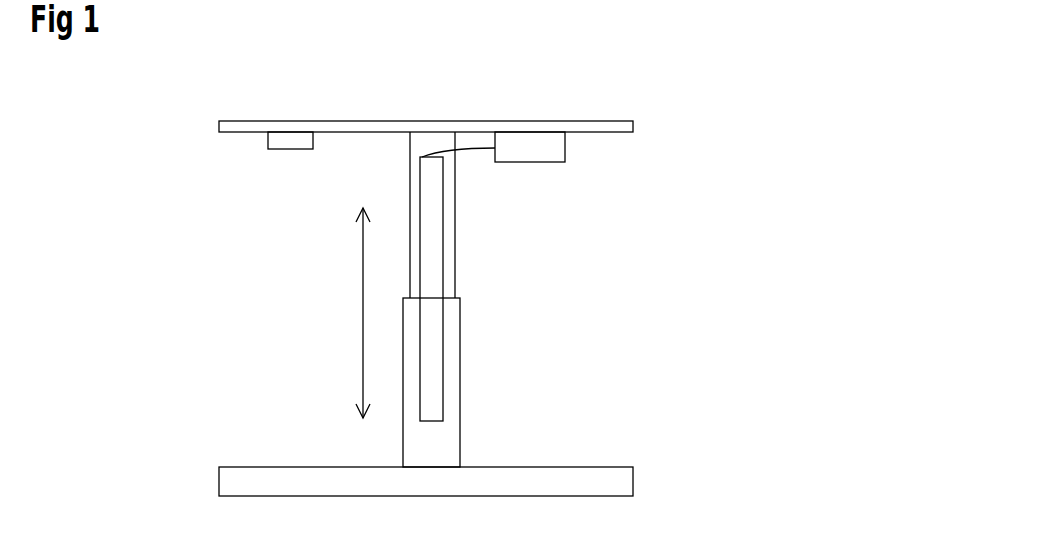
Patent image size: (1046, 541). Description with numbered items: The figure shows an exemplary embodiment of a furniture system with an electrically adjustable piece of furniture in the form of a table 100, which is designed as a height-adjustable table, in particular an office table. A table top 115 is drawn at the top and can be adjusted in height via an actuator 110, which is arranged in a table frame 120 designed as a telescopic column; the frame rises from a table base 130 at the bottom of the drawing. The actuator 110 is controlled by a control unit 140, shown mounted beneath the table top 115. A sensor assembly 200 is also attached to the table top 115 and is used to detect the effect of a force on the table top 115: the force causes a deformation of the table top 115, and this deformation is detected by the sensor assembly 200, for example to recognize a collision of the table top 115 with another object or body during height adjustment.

The table 100 is at (254, 103).
The table top 115 is at (633, 127).
The sensor assembly 200 is at (290, 149).
The actuator 110 is at (442, 288).
The table frame 120 is at (460, 378).
The control unit 140 is at (530, 162).
The table base 130 is at (633, 478).